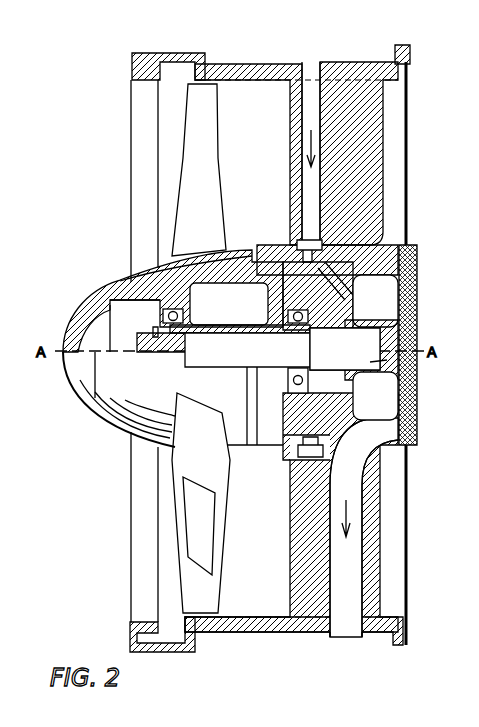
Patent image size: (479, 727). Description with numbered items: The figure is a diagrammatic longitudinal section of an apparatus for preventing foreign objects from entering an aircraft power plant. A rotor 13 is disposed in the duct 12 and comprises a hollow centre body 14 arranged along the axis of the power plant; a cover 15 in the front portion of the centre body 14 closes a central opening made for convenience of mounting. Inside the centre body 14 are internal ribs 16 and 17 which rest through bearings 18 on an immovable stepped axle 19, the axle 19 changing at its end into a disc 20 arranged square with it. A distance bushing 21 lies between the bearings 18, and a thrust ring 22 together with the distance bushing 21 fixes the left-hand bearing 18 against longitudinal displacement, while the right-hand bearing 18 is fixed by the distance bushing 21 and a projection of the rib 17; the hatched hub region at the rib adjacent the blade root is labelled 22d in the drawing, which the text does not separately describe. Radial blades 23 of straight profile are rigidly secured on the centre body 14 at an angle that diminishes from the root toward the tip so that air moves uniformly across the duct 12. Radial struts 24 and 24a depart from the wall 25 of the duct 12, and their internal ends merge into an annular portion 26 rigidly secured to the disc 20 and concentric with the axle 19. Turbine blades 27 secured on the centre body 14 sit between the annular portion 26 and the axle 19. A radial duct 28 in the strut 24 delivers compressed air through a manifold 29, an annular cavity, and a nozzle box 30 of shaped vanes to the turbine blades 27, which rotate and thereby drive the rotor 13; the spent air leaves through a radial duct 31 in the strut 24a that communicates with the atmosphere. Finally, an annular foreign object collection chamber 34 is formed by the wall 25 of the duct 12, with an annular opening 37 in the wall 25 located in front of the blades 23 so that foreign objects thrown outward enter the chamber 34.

The duct 12 is at (265, 615).
The rotor 13 is at (117, 434).
The centre body 14 is at (132, 272).
The cover 15 is at (82, 320).
The internal rib 16 is at (157, 292).
The internal rib 17 is at (275, 290).
The bearings 18 is at (282, 310).
The axle 19 is at (419, 378).
The disc 20 is at (414, 288).
The distance bushing 21 is at (238, 342).
The thrust ring 22 is at (157, 330).
The hub disc 22d is at (225, 251).
The radial blades 23 is at (210, 92).
The radial strut 24 is at (370, 118).
The radial strut 24a is at (375, 510).
The wall 25 is at (268, 76).
The annular portion 26 is at (405, 241).
The turbine blades 27 is at (353, 290).
The radial duct 28 is at (308, 110).
The manifold 29 is at (298, 455).
The nozzle box 30 is at (298, 222).
The radial duct 31 is at (350, 608).
The foreign object collection chamber 34 is at (197, 645).
The annular opening 37 is at (177, 622).